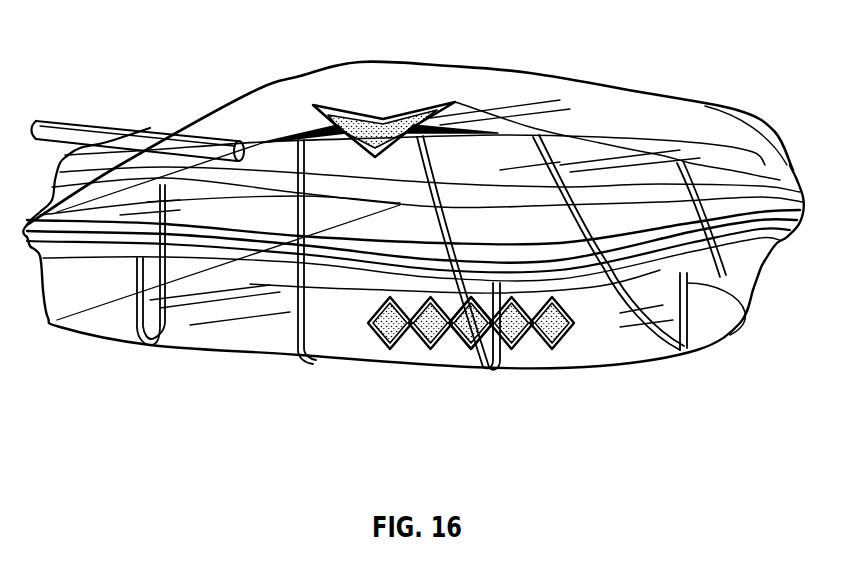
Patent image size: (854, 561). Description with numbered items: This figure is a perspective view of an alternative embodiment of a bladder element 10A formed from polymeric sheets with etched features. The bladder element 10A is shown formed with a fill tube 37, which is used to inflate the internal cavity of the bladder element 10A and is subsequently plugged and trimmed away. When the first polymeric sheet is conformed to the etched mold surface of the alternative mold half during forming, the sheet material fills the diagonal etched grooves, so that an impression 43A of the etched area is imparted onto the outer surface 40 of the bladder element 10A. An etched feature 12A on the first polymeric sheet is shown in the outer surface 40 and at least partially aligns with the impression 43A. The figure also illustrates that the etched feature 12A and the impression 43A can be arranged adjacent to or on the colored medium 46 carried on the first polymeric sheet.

The bladder element 10A is at (667, 53).
The fill tube 37 is at (57, 120).
The outer surface 40 is at (727, 318).
The impression 43A is at (313, 362).
The etched feature 12A is at (397, 365).
The colored medium 46 is at (470, 348).